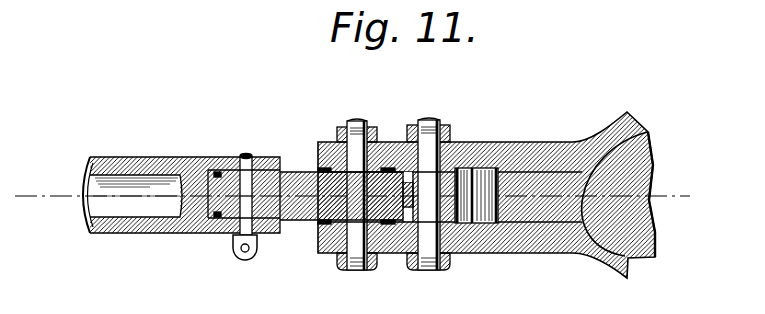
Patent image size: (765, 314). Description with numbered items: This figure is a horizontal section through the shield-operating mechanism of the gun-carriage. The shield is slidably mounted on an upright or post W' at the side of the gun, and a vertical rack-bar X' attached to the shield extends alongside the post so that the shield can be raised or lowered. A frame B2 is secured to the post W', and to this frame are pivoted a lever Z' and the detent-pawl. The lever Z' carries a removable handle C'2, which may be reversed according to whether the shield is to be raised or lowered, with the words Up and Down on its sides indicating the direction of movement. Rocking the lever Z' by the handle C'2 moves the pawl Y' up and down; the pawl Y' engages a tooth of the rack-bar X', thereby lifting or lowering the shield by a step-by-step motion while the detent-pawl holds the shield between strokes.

The removable handle C'2 is at (181, 192).
The lever Z' is at (305, 174).
The frame B2 is at (527, 137).
The pawl Y' is at (476, 165).
The vertical rack-bar X' is at (450, 197).
The upright or post W' is at (632, 194).